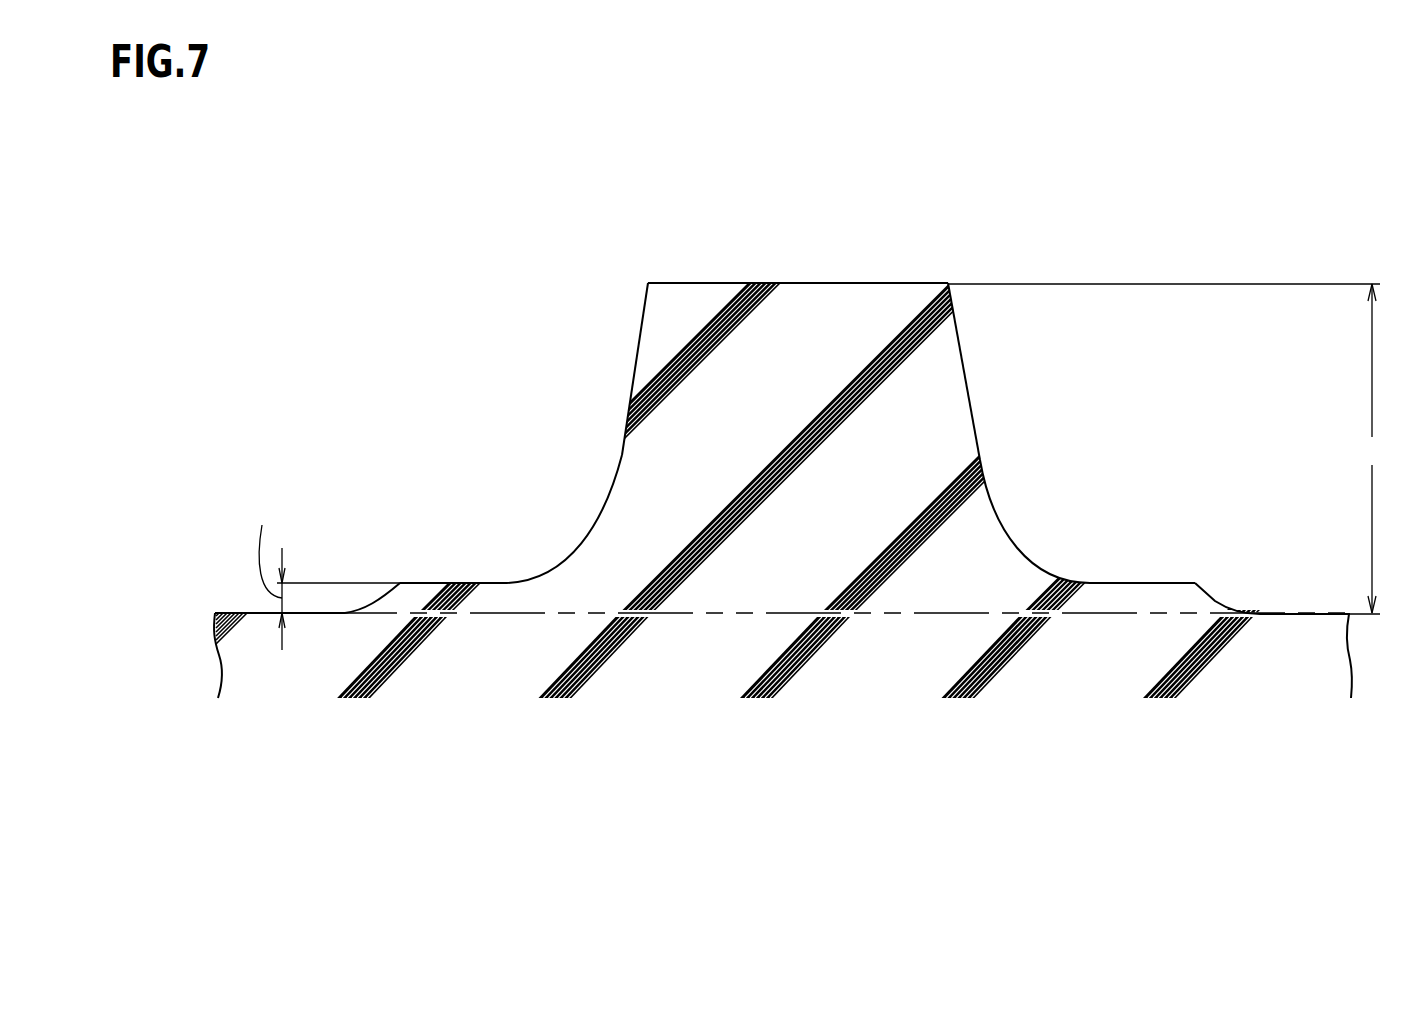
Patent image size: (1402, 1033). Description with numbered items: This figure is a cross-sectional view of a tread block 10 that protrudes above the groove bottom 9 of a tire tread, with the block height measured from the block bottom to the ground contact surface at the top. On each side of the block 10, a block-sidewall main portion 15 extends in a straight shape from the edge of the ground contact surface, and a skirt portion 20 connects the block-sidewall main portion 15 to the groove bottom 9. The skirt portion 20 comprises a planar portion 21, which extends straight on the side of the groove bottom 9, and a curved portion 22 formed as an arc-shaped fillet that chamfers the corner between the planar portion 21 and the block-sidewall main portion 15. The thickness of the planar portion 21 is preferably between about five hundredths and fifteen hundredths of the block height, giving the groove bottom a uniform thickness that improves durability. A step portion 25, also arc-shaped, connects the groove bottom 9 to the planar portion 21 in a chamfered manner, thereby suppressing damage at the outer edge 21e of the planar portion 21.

The groove bottom 9 is at (242, 613).
The block 10 is at (877, 277).
The block-sidewall main portion 15 is at (632, 372).
The skirt portion 20 is at (511, 480).
The planar portion 21 is at (452, 583).
The outer edge of the planar portion 21e is at (400, 583).
The curved portion 22 is at (573, 557).
The step portion 25 is at (1214, 600).